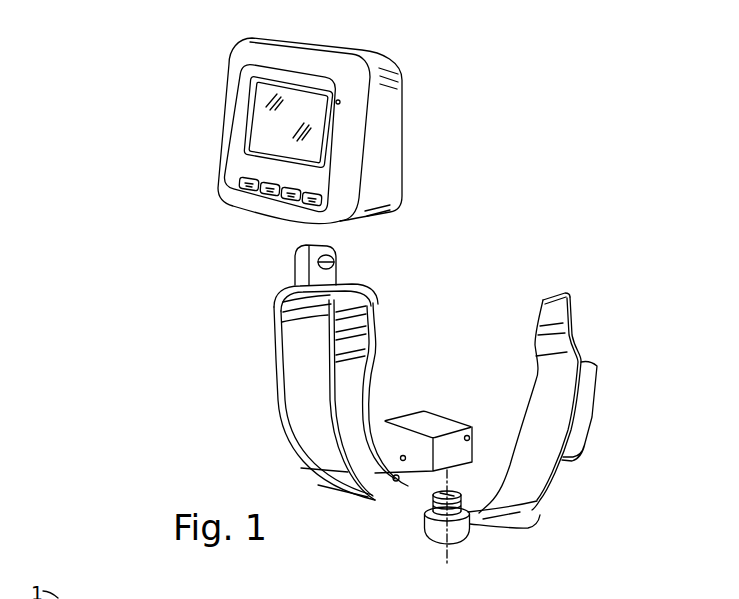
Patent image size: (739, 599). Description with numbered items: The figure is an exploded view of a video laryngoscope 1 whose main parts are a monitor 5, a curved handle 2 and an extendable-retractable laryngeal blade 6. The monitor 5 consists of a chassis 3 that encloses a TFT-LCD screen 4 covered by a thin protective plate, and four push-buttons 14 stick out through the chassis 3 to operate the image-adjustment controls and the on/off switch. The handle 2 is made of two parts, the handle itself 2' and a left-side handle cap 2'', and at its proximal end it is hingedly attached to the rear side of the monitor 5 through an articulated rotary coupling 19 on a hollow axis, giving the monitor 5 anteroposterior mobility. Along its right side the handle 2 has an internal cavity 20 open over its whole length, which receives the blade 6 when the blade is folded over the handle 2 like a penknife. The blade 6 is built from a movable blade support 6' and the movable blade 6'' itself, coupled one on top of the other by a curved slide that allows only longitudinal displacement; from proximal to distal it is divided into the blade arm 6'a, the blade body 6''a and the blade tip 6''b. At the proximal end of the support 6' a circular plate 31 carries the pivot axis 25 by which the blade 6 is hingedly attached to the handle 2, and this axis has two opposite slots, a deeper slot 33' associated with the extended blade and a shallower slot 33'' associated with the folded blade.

The video laryngoscope 1 is at (121, 81).
The handle 2 is at (310, 375).
The handle itself 2' is at (287, 453).
The left-side handle cap 2'' is at (275, 392).
The chassis 3 is at (392, 93).
The screen 4 is at (267, 138).
The monitor 5 is at (419, 139).
The laryngeal blade 6 is at (584, 422).
The movable blade support 6' is at (537, 541).
The movable blade 6'' is at (611, 412).
The blade arm 6'a is at (543, 513).
The blade body 6''a is at (530, 405).
The blade tip 6''b is at (525, 317).
The push-buttons 14 is at (264, 188).
The articulated rotary coupling 19 is at (308, 260).
The internal cavity 20 is at (348, 388).
The pivot axis 25 is at (446, 555).
The circular plate 31 is at (462, 530).
The deeper slot 33' is at (468, 487).
The shallower slot 33'' is at (414, 520).